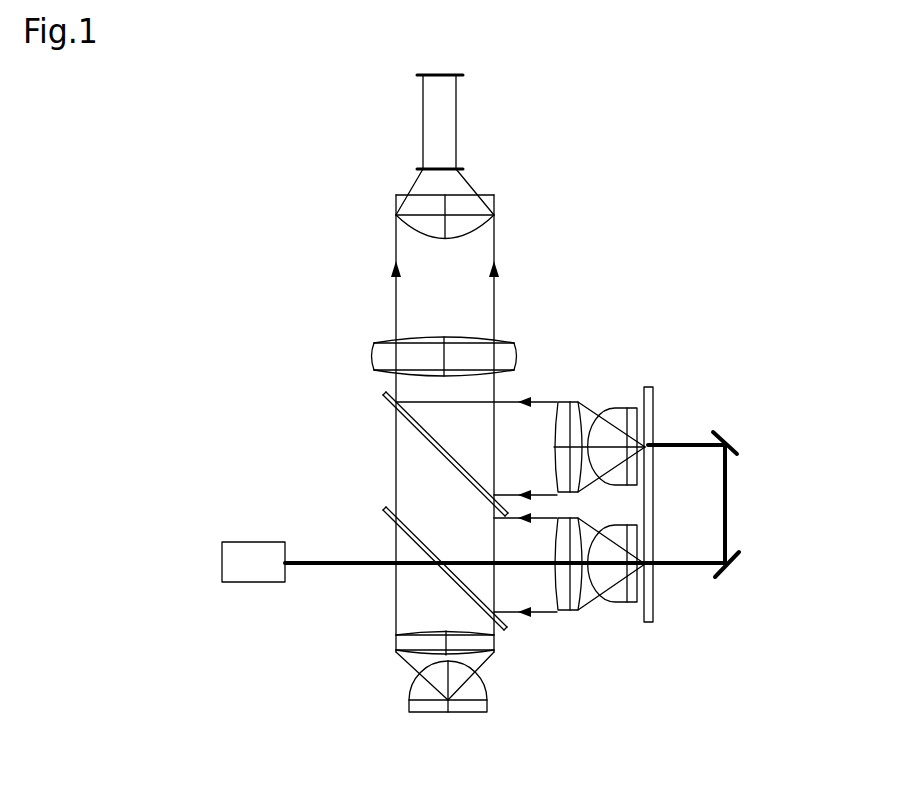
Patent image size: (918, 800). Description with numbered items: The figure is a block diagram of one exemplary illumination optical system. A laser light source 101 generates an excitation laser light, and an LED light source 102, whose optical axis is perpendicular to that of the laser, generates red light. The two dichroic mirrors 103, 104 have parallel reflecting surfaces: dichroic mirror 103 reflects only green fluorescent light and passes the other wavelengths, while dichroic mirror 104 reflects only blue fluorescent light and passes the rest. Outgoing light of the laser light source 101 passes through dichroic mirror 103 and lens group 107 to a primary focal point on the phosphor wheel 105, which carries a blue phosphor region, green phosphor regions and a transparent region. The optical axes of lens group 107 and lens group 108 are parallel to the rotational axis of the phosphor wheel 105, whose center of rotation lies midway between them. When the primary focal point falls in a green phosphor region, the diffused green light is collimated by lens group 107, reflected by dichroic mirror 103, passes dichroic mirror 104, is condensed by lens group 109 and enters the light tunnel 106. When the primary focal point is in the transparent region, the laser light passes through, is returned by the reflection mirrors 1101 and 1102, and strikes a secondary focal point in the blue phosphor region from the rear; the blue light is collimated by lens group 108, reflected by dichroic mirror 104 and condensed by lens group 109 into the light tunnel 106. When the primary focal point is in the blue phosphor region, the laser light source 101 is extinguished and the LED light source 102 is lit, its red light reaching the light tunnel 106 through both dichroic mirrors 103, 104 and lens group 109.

The laser light source 101 is at (238, 542).
The LED light source 102 is at (458, 712).
The dichroic mirror 103 is at (385, 509).
The dichroic mirror 104 is at (384, 394).
The phosphor wheel 105 is at (650, 387).
The light tunnel 106 is at (456, 118).
The lens group 107 is at (635, 617).
The lens group 108 is at (635, 393).
The lens group 109 is at (530, 190).
The reflection mirror 1101 is at (742, 556).
The reflection mirror 1102 is at (727, 436).